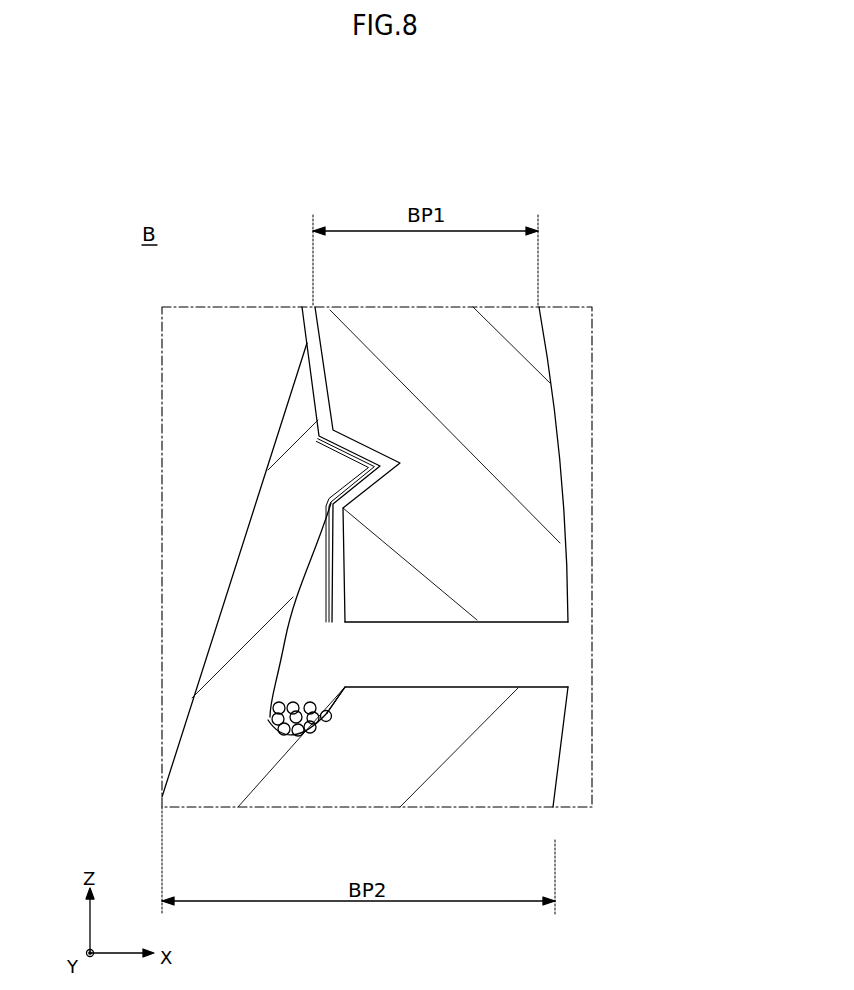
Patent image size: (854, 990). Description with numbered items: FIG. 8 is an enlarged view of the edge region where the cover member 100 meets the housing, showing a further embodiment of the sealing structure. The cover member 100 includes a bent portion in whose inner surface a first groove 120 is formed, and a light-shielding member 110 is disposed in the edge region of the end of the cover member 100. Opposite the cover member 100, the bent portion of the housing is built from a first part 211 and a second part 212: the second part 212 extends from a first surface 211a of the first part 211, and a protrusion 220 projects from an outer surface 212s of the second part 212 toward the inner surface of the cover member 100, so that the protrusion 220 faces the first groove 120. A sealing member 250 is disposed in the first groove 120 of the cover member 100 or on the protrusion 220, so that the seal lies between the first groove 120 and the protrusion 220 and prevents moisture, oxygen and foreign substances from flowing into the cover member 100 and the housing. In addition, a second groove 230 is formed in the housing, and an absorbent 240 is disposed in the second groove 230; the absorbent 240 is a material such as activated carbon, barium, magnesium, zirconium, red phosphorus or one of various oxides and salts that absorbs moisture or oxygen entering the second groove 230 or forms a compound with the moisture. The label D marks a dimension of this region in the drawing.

The cover member 100 is at (520, 472).
The light-shielding member 110 is at (303, 330).
The first groove 120 is at (400, 463).
The first part 211 is at (398, 728).
The first surface 211a is at (520, 690).
The second part 212 is at (250, 633).
The outer surface 212s is at (303, 555).
The protrusion 220 is at (338, 465).
The second groove 230 is at (278, 746).
The absorbent 240 is at (270, 712).
The sealing member 250 is at (335, 482).
The gap / distance D is at (495, 652).